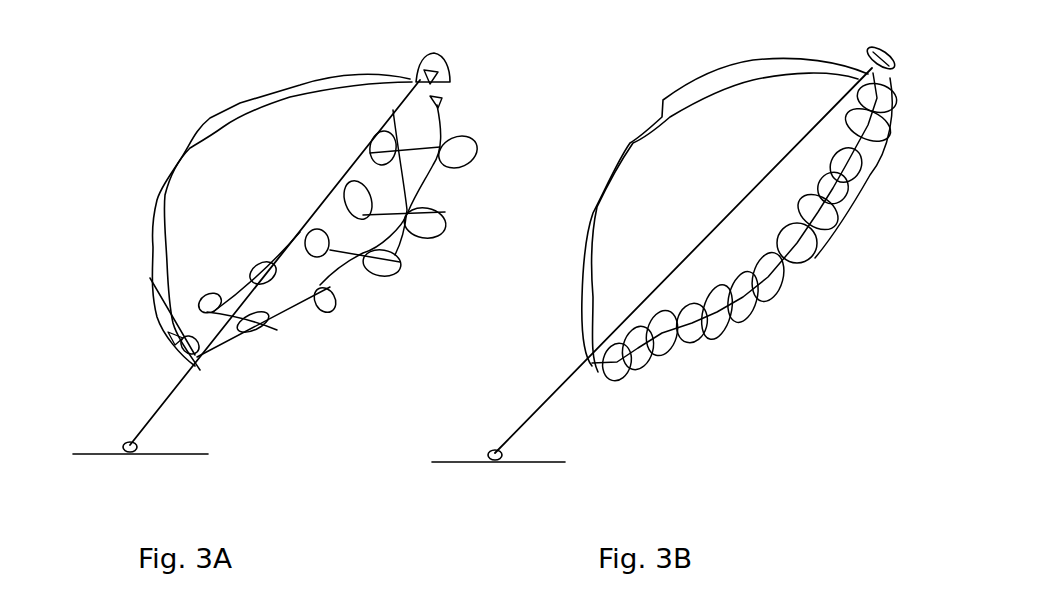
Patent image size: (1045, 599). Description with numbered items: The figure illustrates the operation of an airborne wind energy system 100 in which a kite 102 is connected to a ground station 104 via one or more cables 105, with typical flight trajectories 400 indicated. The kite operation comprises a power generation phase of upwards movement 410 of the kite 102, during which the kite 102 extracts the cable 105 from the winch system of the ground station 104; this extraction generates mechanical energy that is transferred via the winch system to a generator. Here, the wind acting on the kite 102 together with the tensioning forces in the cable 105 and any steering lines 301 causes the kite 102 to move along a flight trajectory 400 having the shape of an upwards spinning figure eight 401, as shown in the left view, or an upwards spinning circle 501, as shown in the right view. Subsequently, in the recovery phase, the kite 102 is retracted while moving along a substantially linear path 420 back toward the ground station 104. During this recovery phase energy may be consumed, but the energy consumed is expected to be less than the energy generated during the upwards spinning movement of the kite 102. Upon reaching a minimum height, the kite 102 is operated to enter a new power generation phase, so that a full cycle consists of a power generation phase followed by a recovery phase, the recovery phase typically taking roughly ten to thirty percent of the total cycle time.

In FIG. 3A, the airborne wind energy system 100 is at (225, 267).
In FIG. 3A, the kite 102 is at (430, 58).
In FIG. 3A, the ground station 104 is at (123, 442).
In FIG. 3B, the ground station 104 is at (495, 450).
In FIG. 3A, the cable 105 is at (175, 387).
In FIG. 3B, the cable 105 is at (545, 393).
In FIG. 3B, the steering line 301 is at (887, 68).
In FIG. 3A, the flight trajectory 400 is at (150, 280).
In FIG. 3B, the flight trajectory 400 is at (708, 72).
In FIG. 3A, the upwards spinning figure eight 401 is at (318, 310).
In FIG. 3A, the upwards movement 410 is at (440, 128).
In FIG. 3B, the upwards movement 410 is at (772, 273).
In FIG. 3A, the substantially linear path 420 is at (157, 203).
In FIG. 3B, the substantially linear path 420 is at (607, 180).
In FIG. 3B, the circle 501 is at (682, 348).